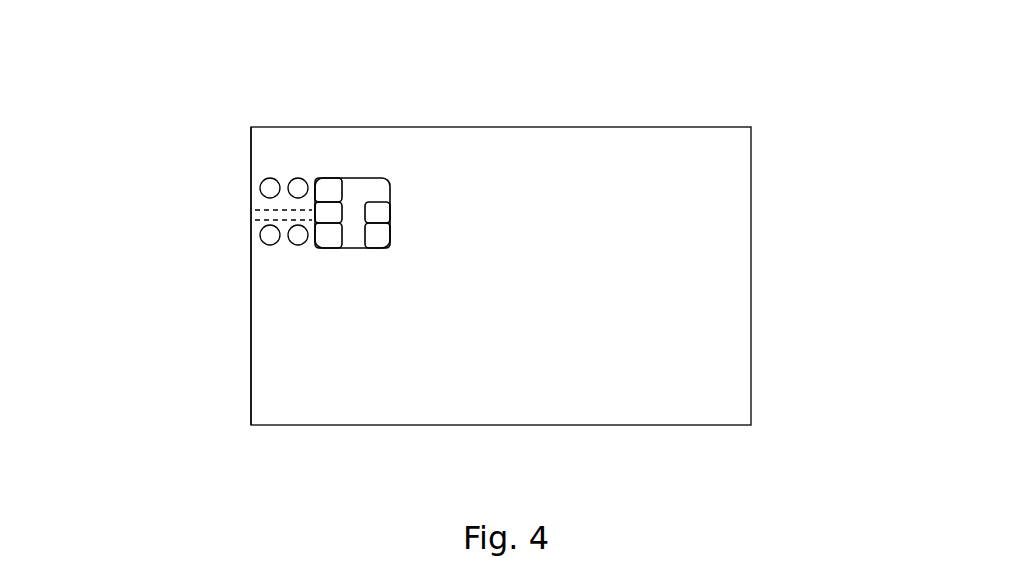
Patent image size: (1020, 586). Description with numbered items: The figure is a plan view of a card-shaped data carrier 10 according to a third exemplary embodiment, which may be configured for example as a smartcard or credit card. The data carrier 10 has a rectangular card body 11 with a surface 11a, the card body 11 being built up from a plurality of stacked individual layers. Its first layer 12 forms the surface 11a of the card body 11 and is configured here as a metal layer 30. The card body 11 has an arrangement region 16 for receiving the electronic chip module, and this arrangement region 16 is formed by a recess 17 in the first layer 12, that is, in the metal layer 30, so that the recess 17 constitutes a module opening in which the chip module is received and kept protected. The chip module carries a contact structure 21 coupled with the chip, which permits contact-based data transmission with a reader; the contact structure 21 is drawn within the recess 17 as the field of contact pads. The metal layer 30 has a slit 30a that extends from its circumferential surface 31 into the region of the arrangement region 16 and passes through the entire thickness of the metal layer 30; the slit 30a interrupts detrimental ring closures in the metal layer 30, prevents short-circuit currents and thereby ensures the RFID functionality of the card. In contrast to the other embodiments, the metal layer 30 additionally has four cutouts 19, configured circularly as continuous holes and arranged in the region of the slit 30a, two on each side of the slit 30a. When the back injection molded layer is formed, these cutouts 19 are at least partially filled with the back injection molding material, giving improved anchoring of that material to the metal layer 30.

The card-shaped data carrier 10 is at (706, 79).
The card body 11 is at (568, 276).
The surface 11a is at (692, 313).
The first layer 12 is at (561, 276).
The metal layer 30 is at (684, 237).
The arrangement region 16 is at (339, 271).
The recess 17 is at (352, 168).
The cutouts 19 is at (267, 176).
The contact structure 21 is at (381, 238).
The slit 30a is at (256, 211).
The circumferential surface 31 is at (239, 389).